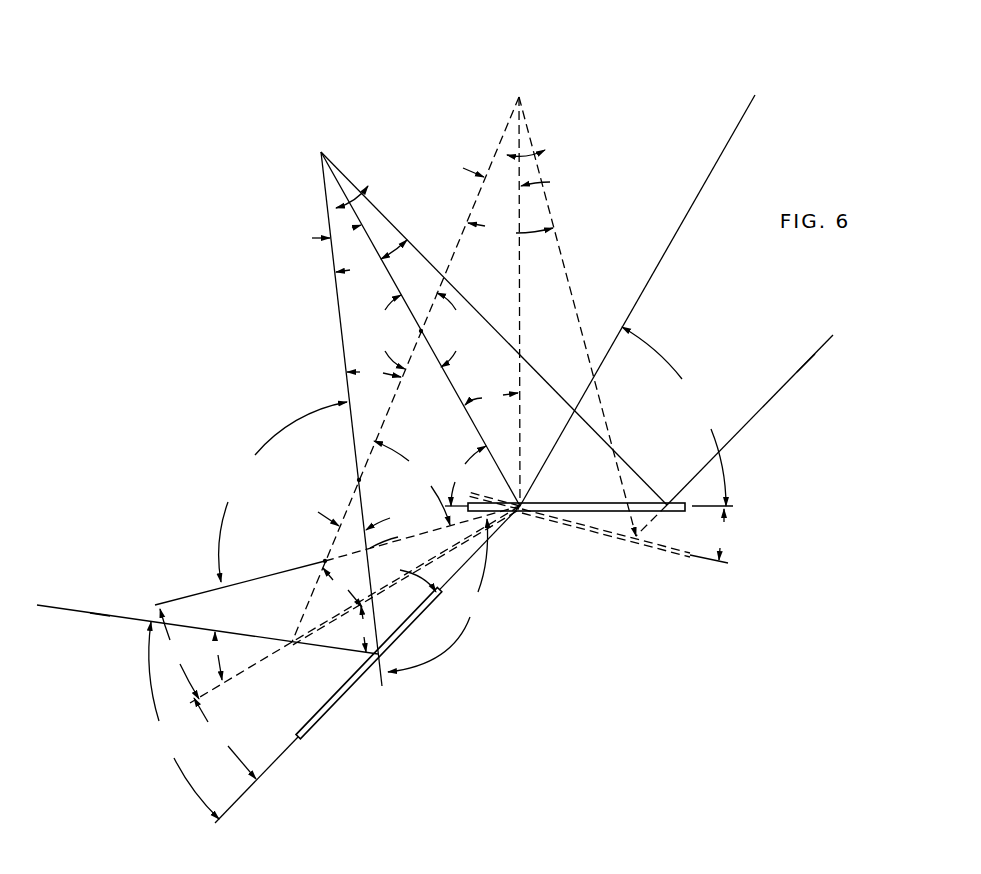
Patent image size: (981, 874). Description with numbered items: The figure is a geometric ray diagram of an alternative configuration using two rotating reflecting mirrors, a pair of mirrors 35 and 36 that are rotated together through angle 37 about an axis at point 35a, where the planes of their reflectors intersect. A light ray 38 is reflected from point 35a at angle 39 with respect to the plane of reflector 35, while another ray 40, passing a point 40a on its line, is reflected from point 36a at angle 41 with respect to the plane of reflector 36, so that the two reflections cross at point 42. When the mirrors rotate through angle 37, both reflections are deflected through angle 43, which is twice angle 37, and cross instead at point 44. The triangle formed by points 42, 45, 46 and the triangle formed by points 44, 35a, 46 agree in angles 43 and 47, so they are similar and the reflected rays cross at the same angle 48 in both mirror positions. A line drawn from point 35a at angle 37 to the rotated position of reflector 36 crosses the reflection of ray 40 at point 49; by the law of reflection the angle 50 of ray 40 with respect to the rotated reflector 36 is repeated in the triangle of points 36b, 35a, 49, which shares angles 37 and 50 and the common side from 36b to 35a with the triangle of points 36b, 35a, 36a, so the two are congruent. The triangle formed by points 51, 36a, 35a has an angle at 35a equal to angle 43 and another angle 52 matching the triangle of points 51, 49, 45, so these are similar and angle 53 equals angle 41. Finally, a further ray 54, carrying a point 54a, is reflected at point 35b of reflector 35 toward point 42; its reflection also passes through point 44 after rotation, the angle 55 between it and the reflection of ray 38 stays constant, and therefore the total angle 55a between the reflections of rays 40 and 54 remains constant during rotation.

The mirror 35 is at (555, 504).
The axis of rotation point 35a is at (520, 508).
The reflection point on reflector 35 35b is at (667, 504).
The mirror 36 is at (323, 710).
The reflection point on reflector 36 36a is at (379, 658).
The point on reflector 36 36b is at (292, 642).
The rotation angle 37 is at (446, 644).
The light ray 38 is at (740, 130).
The reflection angle 39 is at (586, 416).
The light ray 40 is at (60, 607).
The point on ray 40 40a is at (98, 614).
The reflection angle 41 is at (292, 687).
The crossing point 42 is at (321, 152).
The deflection angle 43 is at (418, 451).
The crossing point after rotation 44 is at (519, 97).
The triangle vertex point 45 is at (358, 480).
The triangle vertex point 46 is at (421, 332).
The triangle angle 47 is at (419, 331).
The crossing angle 48 is at (431, 207).
The intersection point 49 is at (324, 561).
The ray angle 50 is at (289, 624).
The triangle vertex point 51 is at (392, 533).
The triangle angle 52 is at (357, 537).
The triangle angle 53 is at (412, 483).
The light ray 54 is at (817, 354).
The point on ray 54 54a is at (799, 372).
The constant angle 55 is at (369, 185).
The total angle 55a is at (444, 250).